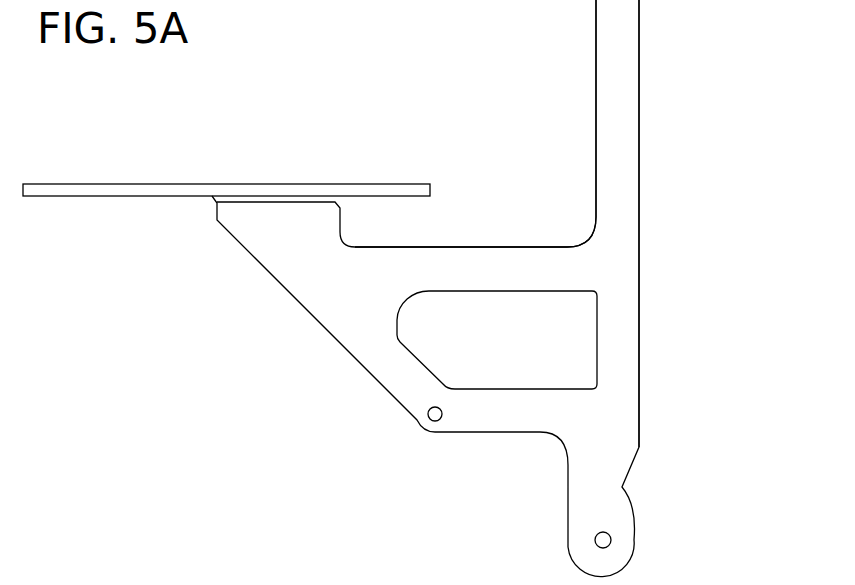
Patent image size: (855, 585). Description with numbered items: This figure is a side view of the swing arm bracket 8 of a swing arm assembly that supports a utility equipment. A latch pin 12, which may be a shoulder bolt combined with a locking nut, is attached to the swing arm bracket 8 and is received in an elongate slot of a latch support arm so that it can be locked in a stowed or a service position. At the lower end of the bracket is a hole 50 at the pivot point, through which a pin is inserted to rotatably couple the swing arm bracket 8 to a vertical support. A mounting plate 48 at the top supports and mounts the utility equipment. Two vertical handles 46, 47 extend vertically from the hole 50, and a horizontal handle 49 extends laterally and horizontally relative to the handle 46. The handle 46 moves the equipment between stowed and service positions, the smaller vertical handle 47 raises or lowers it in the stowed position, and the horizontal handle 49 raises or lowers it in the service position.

The swing arm bracket 8 is at (735, 170).
The latch pin 12 is at (428, 416).
The vertical handle 46 is at (660, 78).
The smaller vertical handle 47 is at (645, 291).
The mounting plate 48 is at (112, 197).
The horizontal handle 49 is at (578, 234).
The hole 50 is at (612, 540).